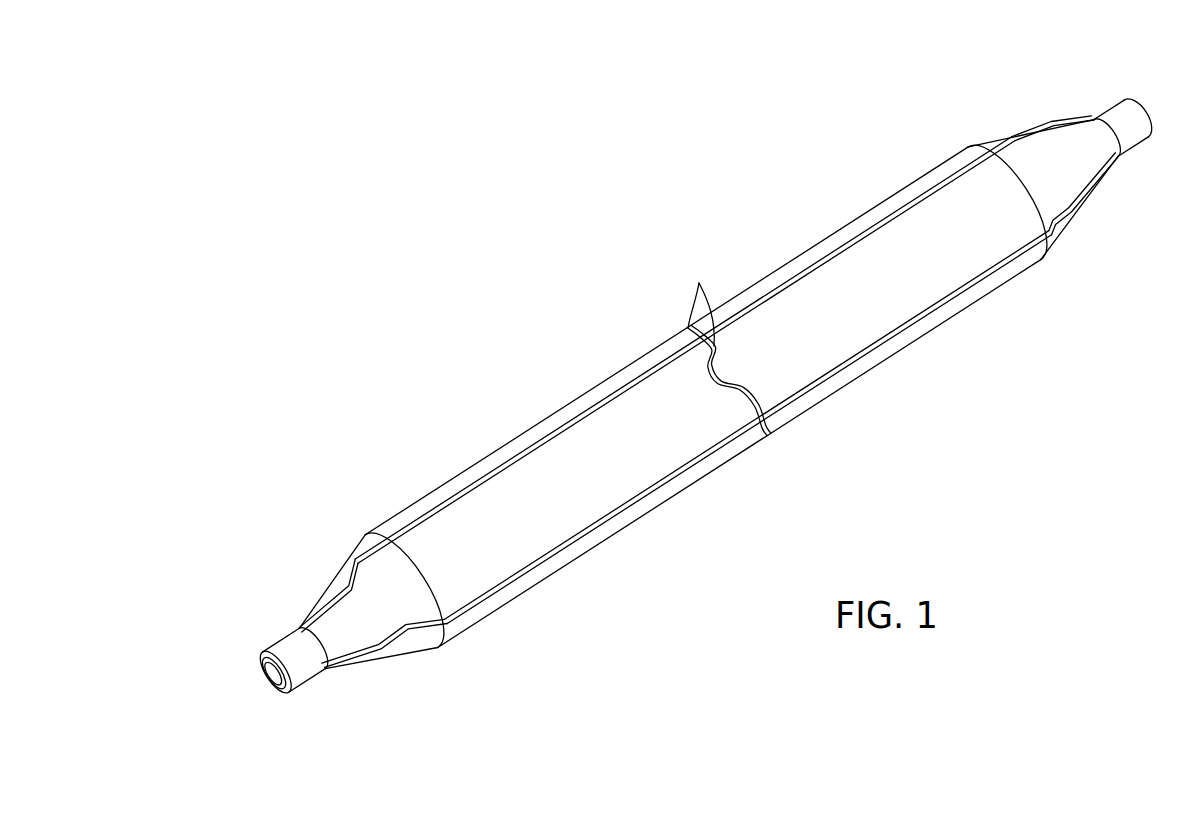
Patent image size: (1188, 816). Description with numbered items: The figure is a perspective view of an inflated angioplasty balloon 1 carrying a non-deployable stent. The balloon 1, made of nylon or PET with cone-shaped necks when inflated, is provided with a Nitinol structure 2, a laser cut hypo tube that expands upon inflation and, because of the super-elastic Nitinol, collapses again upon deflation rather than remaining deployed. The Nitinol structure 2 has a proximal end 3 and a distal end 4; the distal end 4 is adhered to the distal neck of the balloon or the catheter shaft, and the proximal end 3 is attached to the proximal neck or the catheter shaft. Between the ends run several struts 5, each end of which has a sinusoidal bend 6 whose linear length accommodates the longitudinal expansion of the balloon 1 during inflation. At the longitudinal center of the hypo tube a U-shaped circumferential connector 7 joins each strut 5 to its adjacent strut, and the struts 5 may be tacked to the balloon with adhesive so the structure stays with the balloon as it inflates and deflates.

The balloon 1 is at (426, 492).
The Nitinol structure 2 is at (312, 707).
The proximal end 3 is at (1113, 105).
The distal end 4 is at (279, 642).
The struts 5 is at (597, 400).
The sinusoidal bend 6 is at (347, 582).
The U-shaped circumferential connector 7 is at (699, 283).